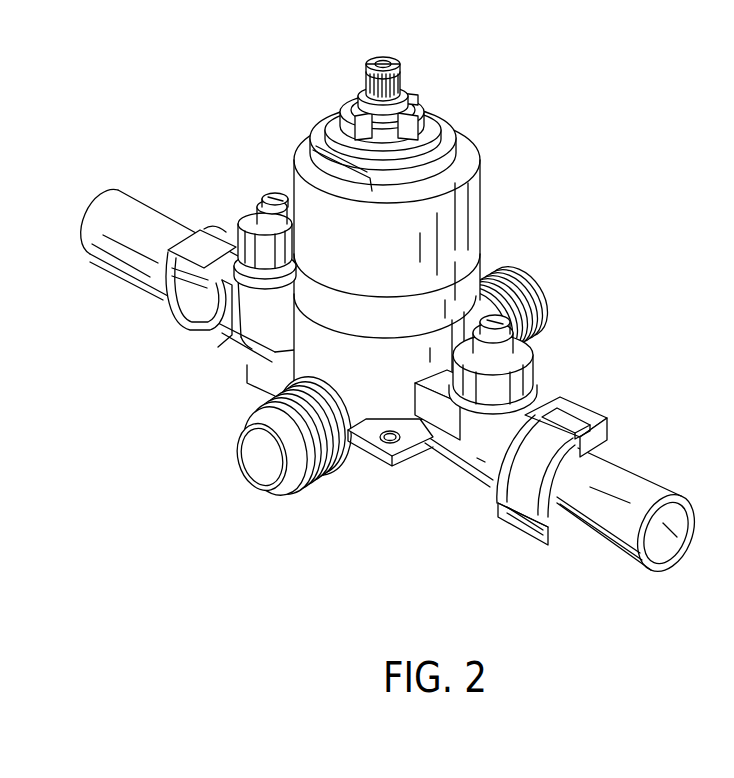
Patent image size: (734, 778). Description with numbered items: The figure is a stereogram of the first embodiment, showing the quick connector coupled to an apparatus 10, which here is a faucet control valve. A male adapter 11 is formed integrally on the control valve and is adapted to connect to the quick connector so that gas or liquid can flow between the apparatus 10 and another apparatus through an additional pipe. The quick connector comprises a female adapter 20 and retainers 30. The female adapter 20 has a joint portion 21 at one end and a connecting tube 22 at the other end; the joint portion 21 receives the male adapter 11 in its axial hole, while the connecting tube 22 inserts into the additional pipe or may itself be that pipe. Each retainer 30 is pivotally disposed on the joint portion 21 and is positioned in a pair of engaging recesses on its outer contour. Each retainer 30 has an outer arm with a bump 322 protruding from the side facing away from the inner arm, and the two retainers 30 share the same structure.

The apparatus 10 is at (500, 126).
The male adapter 11 is at (440, 448).
The female adapter 20 is at (604, 470).
The joint portion 21 is at (572, 405).
The connecting tube 22 is at (630, 478).
The retainer 30 is at (197, 318).
The bump 322 is at (172, 290).